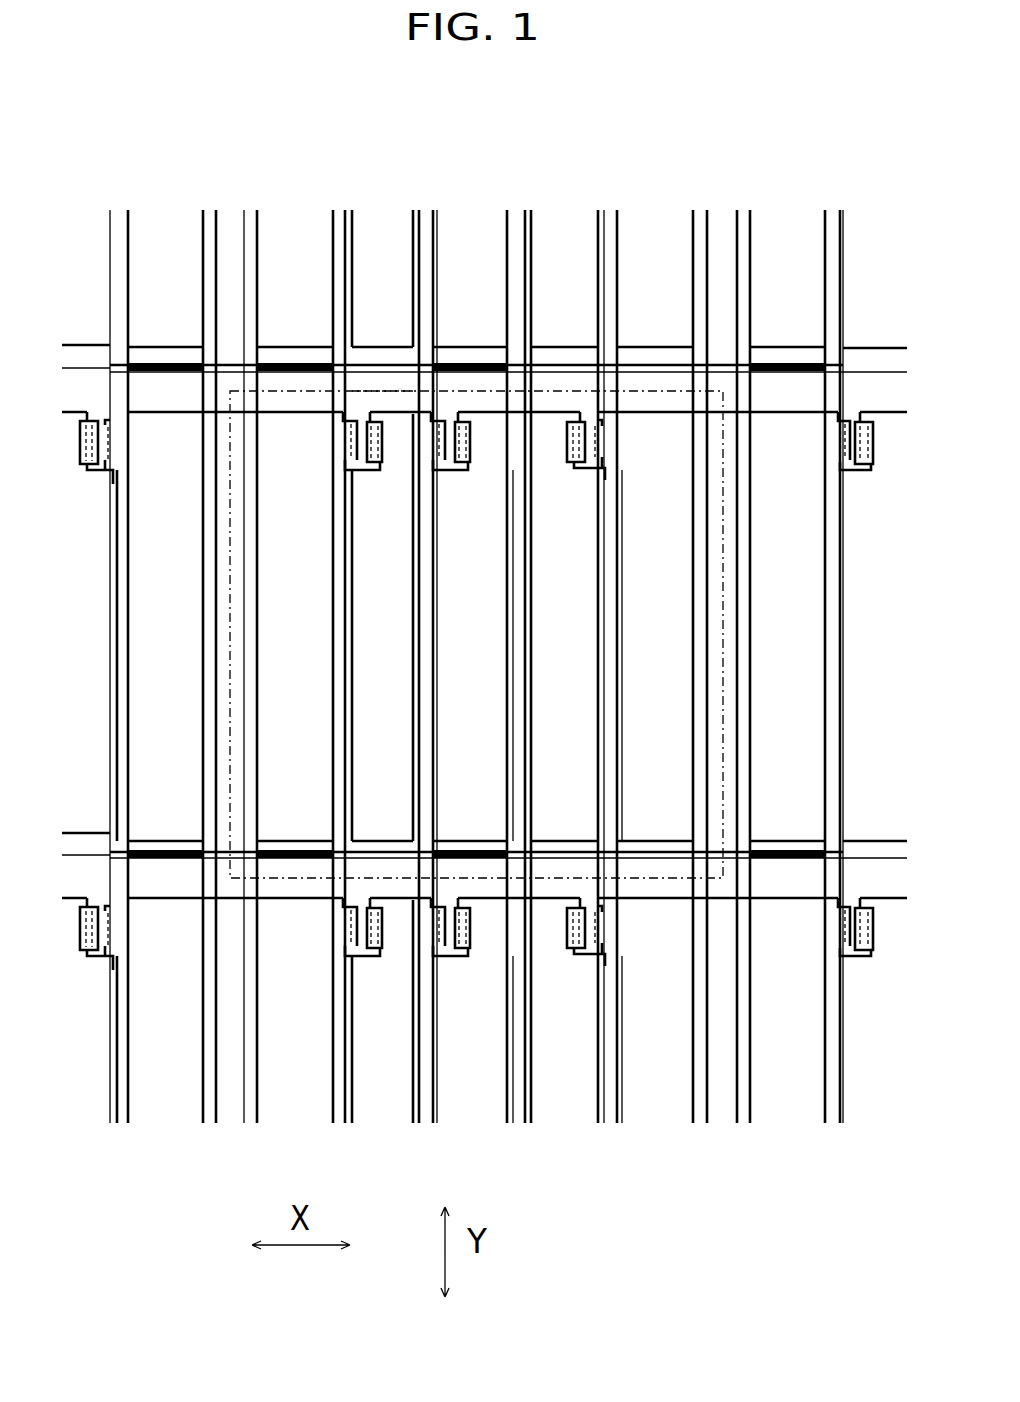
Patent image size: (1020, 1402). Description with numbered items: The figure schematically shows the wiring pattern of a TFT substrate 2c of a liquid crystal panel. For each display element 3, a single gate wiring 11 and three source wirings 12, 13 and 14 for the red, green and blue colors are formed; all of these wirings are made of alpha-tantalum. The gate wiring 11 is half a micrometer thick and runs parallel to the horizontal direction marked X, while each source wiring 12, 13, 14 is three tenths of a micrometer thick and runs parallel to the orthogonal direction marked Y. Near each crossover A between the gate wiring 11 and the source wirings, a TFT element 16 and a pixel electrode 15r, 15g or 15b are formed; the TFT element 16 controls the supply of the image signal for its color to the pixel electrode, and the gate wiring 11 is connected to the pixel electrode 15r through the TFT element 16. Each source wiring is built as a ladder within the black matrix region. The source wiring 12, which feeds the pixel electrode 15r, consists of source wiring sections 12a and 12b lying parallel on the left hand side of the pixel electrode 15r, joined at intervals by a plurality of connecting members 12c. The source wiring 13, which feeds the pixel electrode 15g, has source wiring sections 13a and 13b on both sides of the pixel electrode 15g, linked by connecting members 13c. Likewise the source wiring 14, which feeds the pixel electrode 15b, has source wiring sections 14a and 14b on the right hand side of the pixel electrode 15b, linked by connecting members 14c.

The gate wiring 11 is at (785, 414).
The source wiring 12 is at (236, 226).
The source wiring section 12a is at (258, 244).
The source wiring section 12b is at (332, 232).
The connecting member 12c is at (285, 346).
The source wiring 13 is at (412, 266).
The source wiring section 13a is at (437, 232).
The source wiring section 13b is at (504, 228).
The connecting member 13c is at (466, 346).
The source wiring 14 is at (593, 234).
The source wiring section 14a is at (619, 233).
The source wiring section 14b is at (695, 622).
The connecting member 14c is at (651, 346).
The pixel electrode 15r is at (362, 566).
The pixel electrode 15g is at (455, 623).
The pixel electrode 15b is at (583, 607).
The TFT element 16 is at (322, 455).
The display element 3 is at (723, 612).
The crossover A is at (410, 383).
The TFT substrate 2c is at (803, 137).